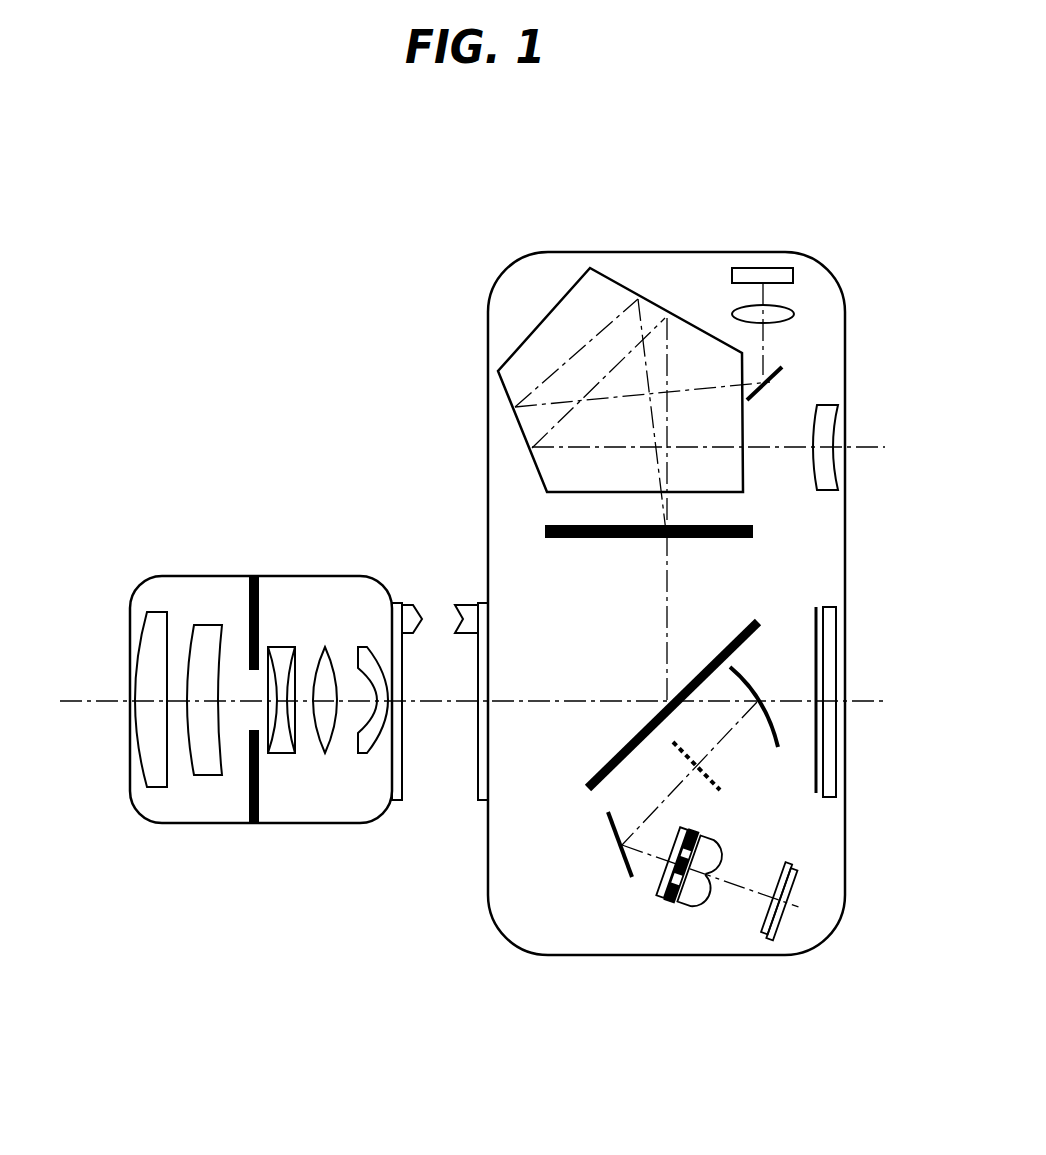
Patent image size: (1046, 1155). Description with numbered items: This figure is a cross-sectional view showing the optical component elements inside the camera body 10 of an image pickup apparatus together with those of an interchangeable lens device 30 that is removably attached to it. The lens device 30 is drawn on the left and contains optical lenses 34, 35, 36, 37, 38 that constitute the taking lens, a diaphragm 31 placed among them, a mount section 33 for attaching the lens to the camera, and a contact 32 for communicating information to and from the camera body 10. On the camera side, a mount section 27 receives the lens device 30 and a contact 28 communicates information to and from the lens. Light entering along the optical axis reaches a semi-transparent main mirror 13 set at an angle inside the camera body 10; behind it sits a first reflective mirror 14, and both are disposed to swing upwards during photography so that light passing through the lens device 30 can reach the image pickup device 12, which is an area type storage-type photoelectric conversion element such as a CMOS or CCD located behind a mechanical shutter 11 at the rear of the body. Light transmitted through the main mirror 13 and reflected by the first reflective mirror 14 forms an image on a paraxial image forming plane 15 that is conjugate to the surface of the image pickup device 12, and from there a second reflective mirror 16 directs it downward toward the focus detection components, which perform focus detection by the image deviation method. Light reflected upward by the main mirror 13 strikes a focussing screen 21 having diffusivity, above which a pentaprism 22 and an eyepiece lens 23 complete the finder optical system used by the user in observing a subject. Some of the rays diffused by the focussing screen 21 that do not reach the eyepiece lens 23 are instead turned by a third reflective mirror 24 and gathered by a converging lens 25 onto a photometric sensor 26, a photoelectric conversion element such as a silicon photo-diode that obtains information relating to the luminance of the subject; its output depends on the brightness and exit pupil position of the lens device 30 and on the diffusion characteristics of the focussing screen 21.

The camera body 10 is at (500, 279).
The mechanical shutter 11 is at (817, 794).
The image pickup device 12 is at (830, 667).
The main mirror 13 is at (748, 617).
The first reflective mirror 14 is at (757, 663).
The field mask 15 is at (720, 790).
The second reflective mirror 16 is at (607, 813).
The focussing screen 21 is at (548, 522).
The pentaprism 22 is at (540, 323).
The eyepiece lens 23 is at (847, 428).
The third reflective mirror 24 is at (781, 375).
The converging lens 25 is at (788, 310).
The photometric sensor 26 is at (751, 267).
The mount section 27 is at (482, 769).
The contact 28 is at (456, 604).
The interchangeable lens device 30 is at (167, 576).
The diaphragm 31 is at (253, 576).
The contact 32 is at (410, 605).
The mount section 33 is at (402, 766).
The optical lens 34 is at (143, 766).
The optical lens 35 is at (210, 777).
The optical lens 36 is at (283, 755).
The optical lens 37 is at (322, 755).
The optical lens 38 is at (385, 755).